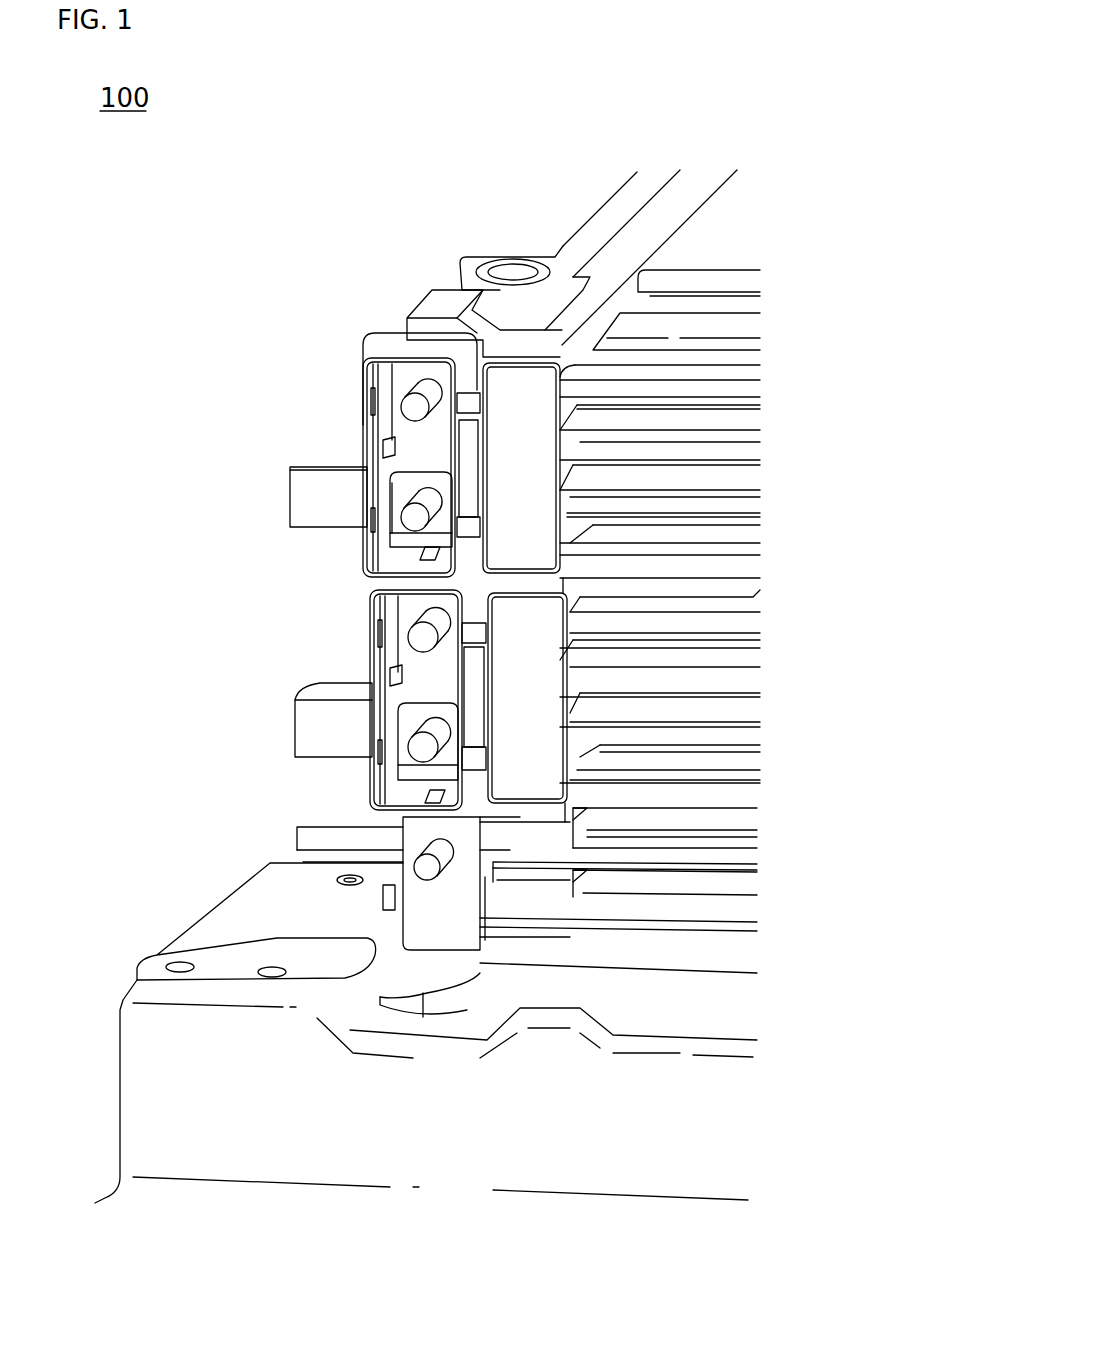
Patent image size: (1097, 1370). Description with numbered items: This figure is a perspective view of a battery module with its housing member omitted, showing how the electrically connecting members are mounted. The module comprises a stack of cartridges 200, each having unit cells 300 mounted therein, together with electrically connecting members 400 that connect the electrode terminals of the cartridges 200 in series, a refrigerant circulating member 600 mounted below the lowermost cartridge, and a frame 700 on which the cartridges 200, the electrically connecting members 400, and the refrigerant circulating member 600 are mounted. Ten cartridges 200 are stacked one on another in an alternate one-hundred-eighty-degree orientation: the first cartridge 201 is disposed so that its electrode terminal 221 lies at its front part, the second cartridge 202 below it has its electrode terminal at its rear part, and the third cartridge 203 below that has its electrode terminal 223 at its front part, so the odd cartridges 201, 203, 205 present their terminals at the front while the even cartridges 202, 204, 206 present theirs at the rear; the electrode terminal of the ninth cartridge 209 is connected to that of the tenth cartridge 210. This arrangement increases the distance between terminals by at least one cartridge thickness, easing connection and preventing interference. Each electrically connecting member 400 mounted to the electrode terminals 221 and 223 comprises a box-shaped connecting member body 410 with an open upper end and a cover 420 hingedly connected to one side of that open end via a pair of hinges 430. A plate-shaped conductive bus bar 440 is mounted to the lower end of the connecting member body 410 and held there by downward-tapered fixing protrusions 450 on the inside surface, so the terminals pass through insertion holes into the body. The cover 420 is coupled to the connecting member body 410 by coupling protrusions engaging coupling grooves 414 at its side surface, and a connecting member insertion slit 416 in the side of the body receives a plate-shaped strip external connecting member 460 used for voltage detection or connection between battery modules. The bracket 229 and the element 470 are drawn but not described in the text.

The cartridges 200 is at (662, 963).
The first cartridge 201 is at (755, 396).
The second cartridge 202 is at (755, 453).
The third cartridge 203 is at (755, 510).
The fourth cartridge 204 is at (755, 567).
The fifth cartridge 205 is at (755, 625).
The sixth cartridge 206 is at (755, 683).
The ninth cartridge 209 is at (753, 862).
The tenth cartridge 210 is at (753, 912).
The electrode terminal 221 is at (410, 395).
The electrode terminal 223 is at (413, 518).
The mounting bracket 229 is at (345, 880).
The unit cells 300 is at (753, 223).
The electrically connecting member 400 is at (320, 360).
The connecting member body 410 is at (363, 423).
The coupling grooves 414 is at (370, 762).
The connecting member insertion slit 416 is at (392, 483).
The cover 420 is at (505, 368).
The hinges 430 is at (473, 408).
The bus bar 440 is at (437, 672).
The fixing protrusions 450 is at (297, 708).
The external connecting member 460 is at (297, 492).
The terminal connector 470 is at (450, 940).
The refrigerant circulating member 600 is at (297, 826).
The frame 700 is at (255, 1115).